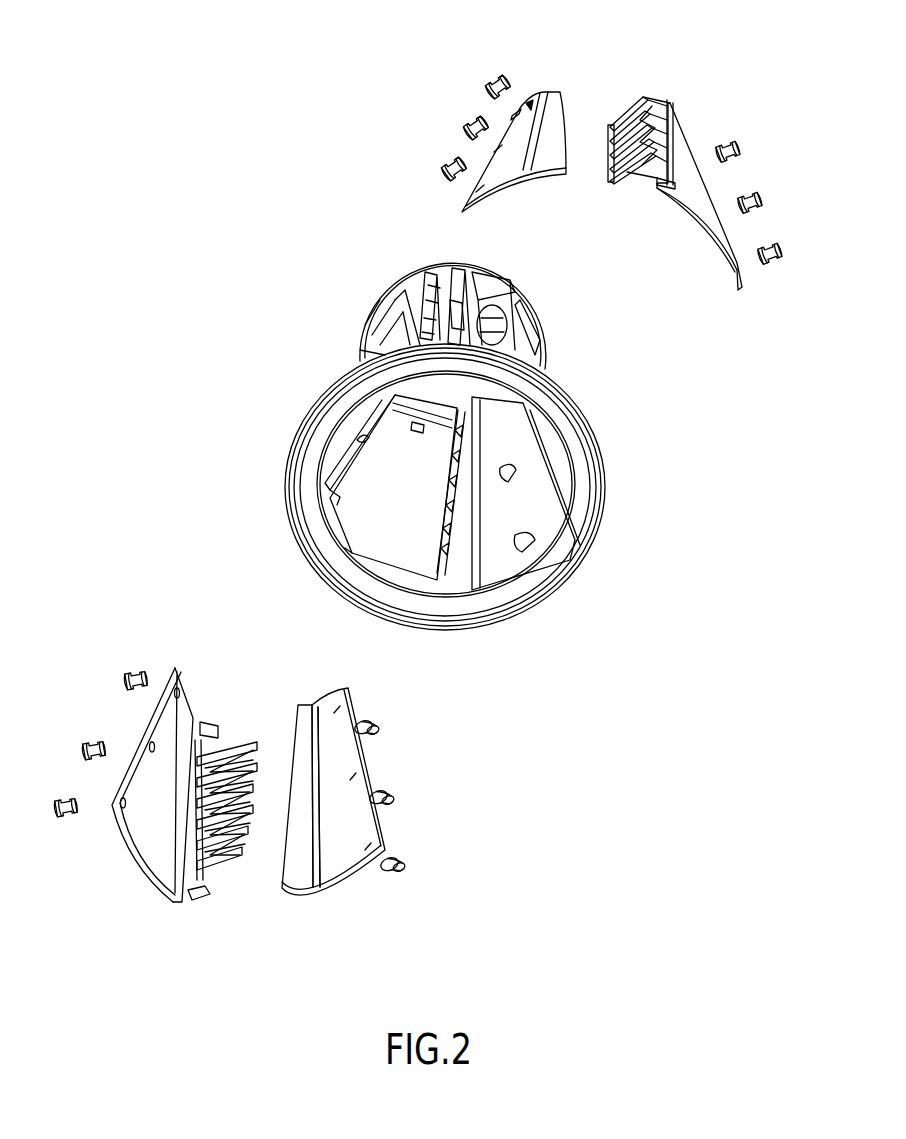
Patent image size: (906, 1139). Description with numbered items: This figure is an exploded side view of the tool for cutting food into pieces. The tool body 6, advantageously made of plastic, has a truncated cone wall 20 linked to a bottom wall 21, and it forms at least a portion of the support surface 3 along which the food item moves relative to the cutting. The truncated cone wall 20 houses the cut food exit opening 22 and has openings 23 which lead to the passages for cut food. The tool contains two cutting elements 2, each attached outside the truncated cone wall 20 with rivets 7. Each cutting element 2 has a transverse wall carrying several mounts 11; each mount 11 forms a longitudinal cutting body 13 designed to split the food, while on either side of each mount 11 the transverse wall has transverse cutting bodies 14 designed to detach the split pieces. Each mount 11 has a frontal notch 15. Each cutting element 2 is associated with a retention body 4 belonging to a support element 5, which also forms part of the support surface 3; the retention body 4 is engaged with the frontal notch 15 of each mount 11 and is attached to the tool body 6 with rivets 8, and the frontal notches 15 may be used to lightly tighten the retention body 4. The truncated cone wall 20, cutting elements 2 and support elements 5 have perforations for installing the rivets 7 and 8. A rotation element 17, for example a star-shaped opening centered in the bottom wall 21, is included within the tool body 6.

The cutting element 2 is at (700, 183).
The support surface 3 is at (530, 100).
The retention body 4 is at (558, 92).
The support element 5 is at (510, 167).
The tool body 6 is at (616, 475).
The rivets 7 is at (738, 150).
The rivets 8 is at (495, 80).
The mount 11 is at (641, 167).
The longitudinal cutting body 13 is at (632, 170).
The transverse cutting body 14 is at (215, 880).
The frontal notch 15 is at (610, 127).
The rotation element 17 is at (422, 302).
The truncated cone wall 20 is at (398, 330).
The bottom wall 21 is at (462, 330).
The cut food exit opening 22 is at (528, 515).
The openings 23 is at (508, 330).